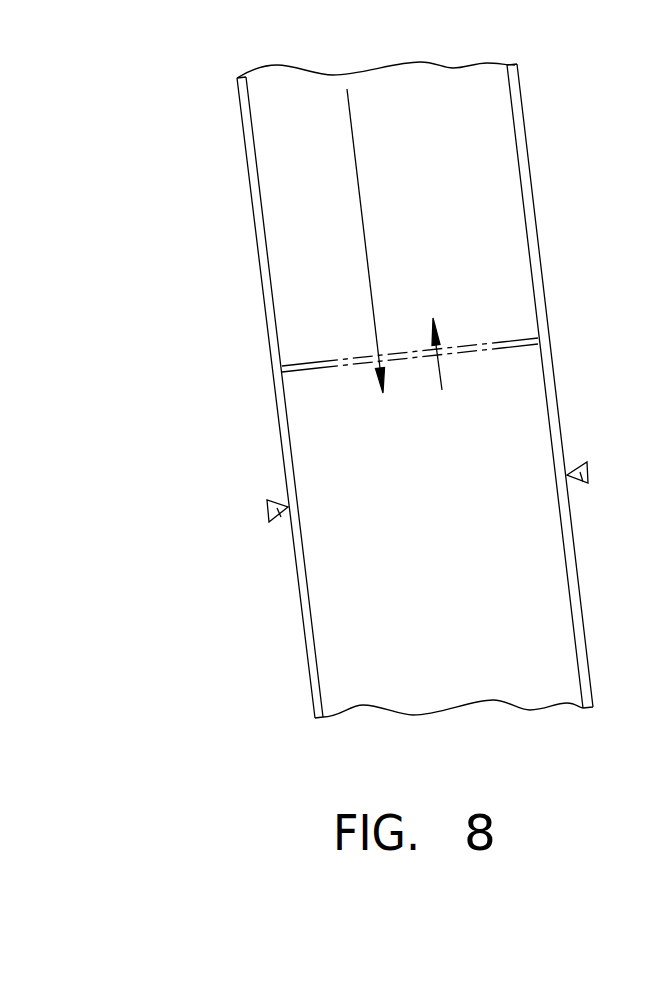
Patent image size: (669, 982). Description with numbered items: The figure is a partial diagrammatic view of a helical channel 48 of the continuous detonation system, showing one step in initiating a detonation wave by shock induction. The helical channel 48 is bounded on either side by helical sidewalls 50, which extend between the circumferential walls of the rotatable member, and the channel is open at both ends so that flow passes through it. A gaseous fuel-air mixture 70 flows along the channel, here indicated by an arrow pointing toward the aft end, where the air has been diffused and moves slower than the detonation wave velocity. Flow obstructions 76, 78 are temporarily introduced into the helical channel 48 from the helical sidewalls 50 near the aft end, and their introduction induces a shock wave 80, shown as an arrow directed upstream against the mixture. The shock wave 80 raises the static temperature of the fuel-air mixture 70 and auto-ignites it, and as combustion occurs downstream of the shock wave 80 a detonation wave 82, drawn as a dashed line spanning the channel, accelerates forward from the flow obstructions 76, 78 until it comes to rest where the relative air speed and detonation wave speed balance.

The helical channel 48 is at (262, 230).
The helical sidewalls 50 is at (533, 255).
The gaseous fuel-air mixture 70 is at (359, 192).
The shock wave 80 is at (442, 377).
The detonation wave 82 is at (533, 348).
The flow obstruction 76 is at (280, 517).
The flow obstruction 78 is at (577, 483).